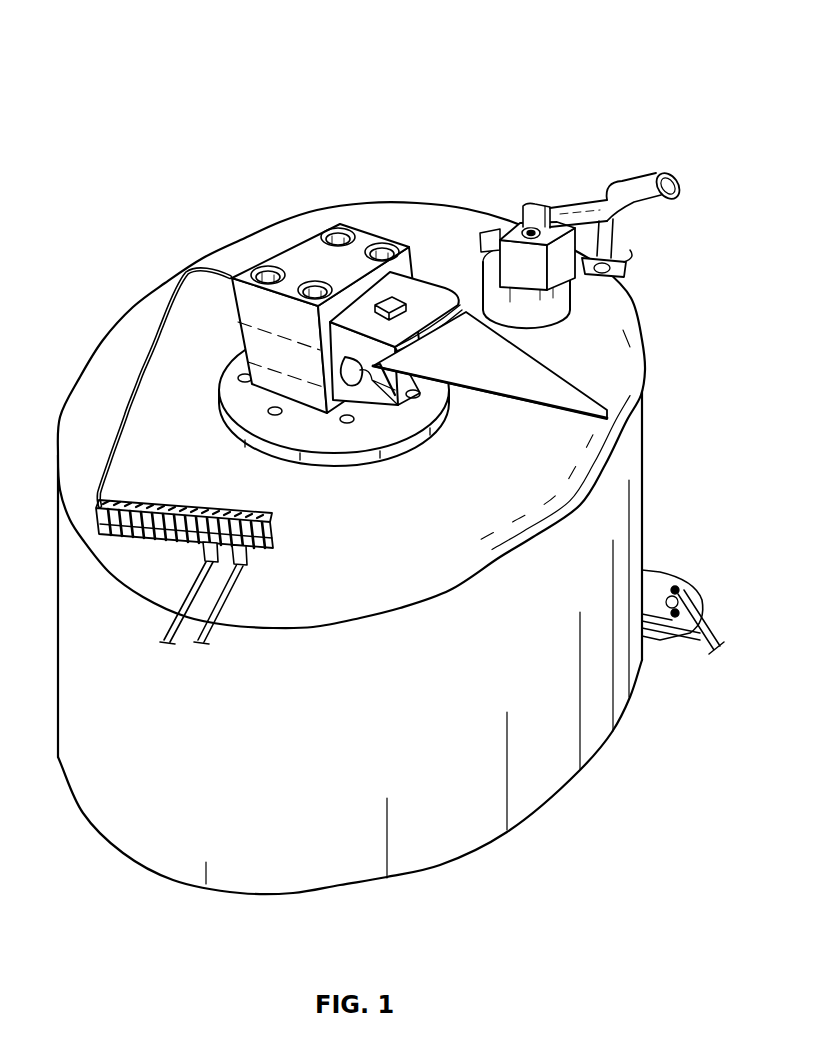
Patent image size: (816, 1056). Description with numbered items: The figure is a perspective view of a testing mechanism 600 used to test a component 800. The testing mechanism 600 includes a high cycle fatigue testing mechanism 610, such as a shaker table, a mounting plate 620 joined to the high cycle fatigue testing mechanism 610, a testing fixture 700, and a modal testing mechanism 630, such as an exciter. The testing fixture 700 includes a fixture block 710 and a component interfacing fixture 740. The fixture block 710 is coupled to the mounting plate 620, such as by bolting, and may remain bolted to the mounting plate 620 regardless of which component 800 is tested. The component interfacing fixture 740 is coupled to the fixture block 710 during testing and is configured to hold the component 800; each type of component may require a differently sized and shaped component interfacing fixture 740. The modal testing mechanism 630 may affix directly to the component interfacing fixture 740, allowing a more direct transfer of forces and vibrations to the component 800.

The testing mechanism 600 is at (120, 67).
The high cycle fatigue testing mechanism 610 is at (634, 503).
The mounting plate 620 is at (268, 406).
The modal testing mechanism 630 is at (383, 296).
The testing fixture 700 is at (396, 145).
The fixture block 710 is at (296, 258).
The component interfacing fixture 740 is at (425, 292).
The component 800 is at (532, 378).